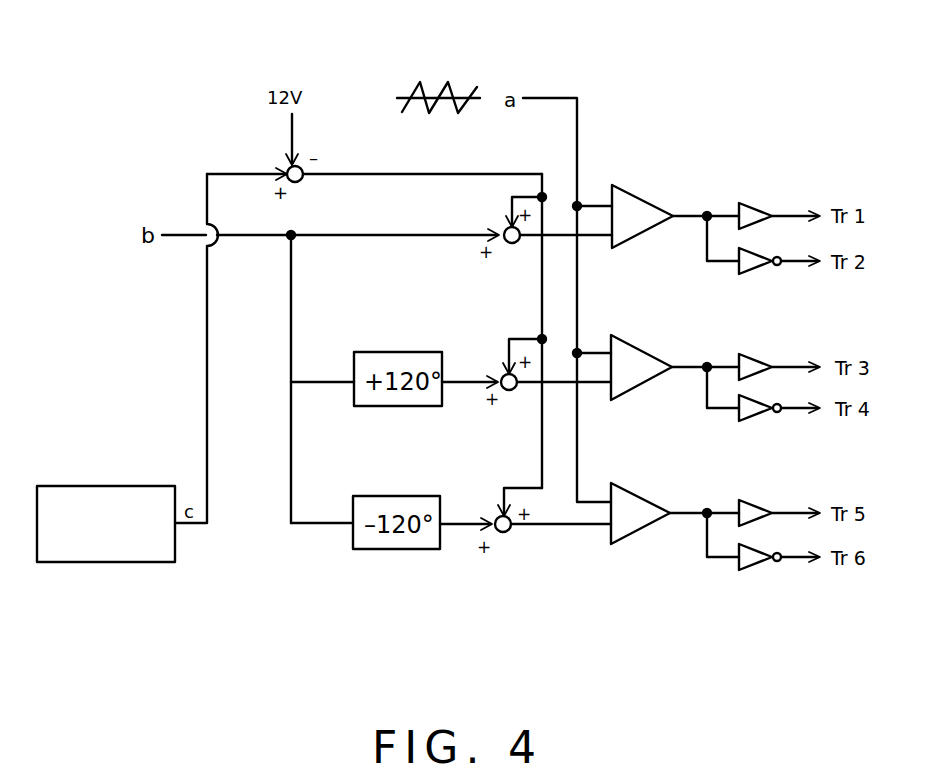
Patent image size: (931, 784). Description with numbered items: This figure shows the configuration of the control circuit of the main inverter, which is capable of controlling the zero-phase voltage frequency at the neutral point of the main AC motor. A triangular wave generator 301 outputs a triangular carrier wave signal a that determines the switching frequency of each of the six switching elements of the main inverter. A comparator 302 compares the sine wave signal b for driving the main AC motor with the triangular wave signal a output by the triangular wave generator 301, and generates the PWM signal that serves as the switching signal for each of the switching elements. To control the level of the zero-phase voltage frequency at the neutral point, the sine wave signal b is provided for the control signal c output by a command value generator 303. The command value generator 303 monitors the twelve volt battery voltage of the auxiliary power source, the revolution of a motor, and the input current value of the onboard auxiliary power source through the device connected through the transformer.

The triangular wave generator 301 is at (456, 84).
The comparator 302 is at (640, 197).
The command value generator 303 is at (140, 563).